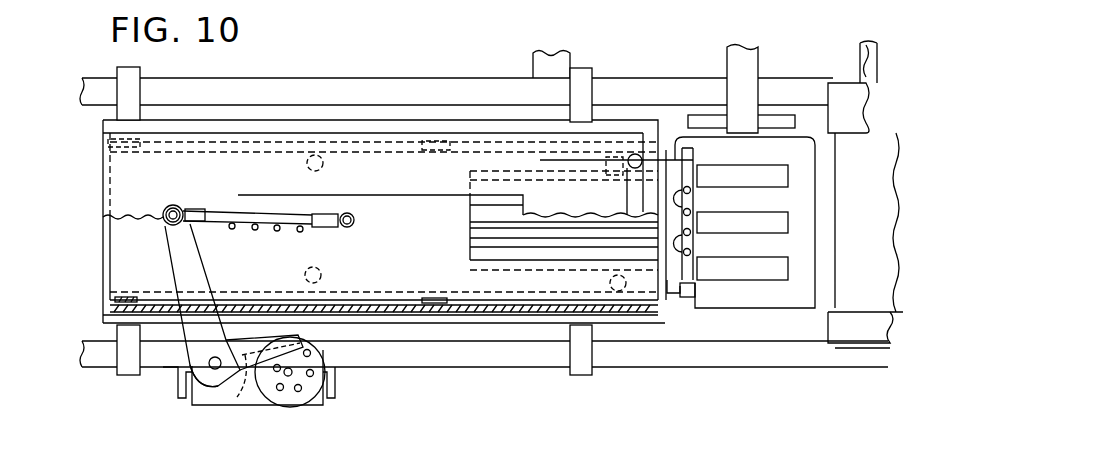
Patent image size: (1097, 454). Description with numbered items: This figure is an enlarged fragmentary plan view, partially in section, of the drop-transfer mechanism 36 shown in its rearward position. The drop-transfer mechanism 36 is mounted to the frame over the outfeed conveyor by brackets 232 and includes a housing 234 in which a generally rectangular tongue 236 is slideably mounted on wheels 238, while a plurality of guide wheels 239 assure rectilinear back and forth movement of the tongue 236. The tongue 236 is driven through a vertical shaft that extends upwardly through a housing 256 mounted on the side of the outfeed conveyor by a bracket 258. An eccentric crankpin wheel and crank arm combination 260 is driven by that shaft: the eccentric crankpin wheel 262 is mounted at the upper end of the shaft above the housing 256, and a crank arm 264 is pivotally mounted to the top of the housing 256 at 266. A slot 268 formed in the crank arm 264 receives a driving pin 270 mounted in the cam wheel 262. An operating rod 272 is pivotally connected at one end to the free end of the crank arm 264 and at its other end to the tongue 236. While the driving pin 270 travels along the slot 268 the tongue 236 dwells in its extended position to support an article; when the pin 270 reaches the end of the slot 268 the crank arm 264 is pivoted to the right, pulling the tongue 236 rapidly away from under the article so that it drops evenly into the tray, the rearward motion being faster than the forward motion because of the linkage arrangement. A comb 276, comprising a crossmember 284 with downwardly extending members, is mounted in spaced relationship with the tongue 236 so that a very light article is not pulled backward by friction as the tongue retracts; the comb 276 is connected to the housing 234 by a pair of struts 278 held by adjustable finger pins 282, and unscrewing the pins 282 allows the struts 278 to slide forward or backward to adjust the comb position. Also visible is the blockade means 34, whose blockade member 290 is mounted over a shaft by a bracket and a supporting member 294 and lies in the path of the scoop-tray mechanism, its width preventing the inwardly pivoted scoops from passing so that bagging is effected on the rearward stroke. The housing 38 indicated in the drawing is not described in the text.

The blockade means 34 is at (718, 103).
The drop-transfer mechanism 36 is at (295, 108).
The housing 38 is at (798, 244).
The brackets 232 is at (141, 73).
The housing 234 is at (113, 315).
The tongue 236 is at (108, 228).
The wheels 238 is at (104, 146).
The guide wheels 239 is at (324, 167).
The housing 256 is at (205, 405).
The bracket 258 is at (180, 393).
The eccentric crankpin wheel and crank arm combination 260 is at (245, 392).
The eccentric crankpin wheel 262 is at (295, 405).
The crank arm 264 is at (196, 258).
The pivot 266 is at (209, 361).
The slot 268 is at (241, 390).
The driving pin 270 is at (303, 340).
The operating rod 272 is at (273, 212).
The comb 276 is at (680, 292).
The struts 278 is at (548, 158).
The adjustable pins 282 is at (635, 154).
The crossmember 284 is at (688, 268).
The blockade member 290 is at (770, 118).
The supporting member 294 is at (743, 47).